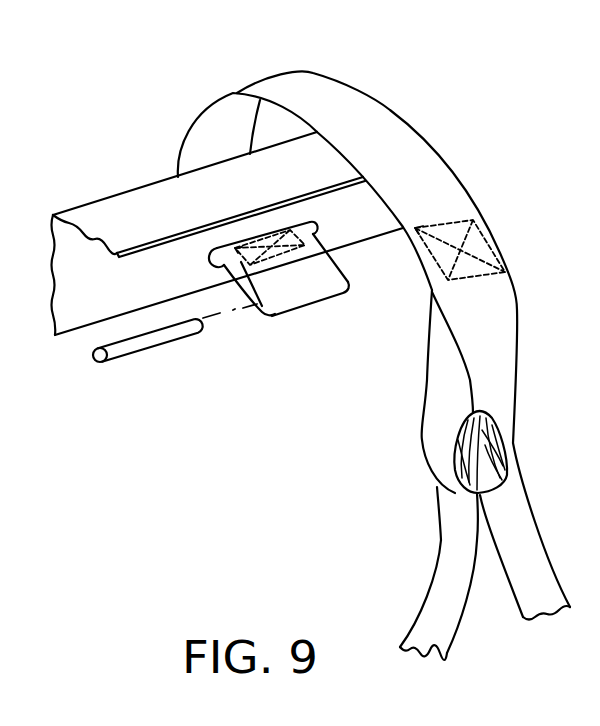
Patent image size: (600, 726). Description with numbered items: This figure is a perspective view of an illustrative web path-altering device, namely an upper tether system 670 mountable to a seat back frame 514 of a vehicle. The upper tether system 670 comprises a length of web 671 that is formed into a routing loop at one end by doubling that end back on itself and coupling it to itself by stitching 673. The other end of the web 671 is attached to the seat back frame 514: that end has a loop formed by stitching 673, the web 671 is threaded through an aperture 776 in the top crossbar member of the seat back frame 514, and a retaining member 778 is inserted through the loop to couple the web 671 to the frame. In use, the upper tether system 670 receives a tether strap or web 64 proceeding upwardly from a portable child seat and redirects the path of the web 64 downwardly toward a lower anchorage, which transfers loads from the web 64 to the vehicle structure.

The seat back frame 514 is at (115, 195).
The aperture 776 is at (213, 256).
The retaining member 778 is at (147, 343).
The upper tether system 670 is at (420, 98).
The web 671 is at (447, 173).
The stitching 673 is at (280, 258).
The web 64 is at (453, 551).